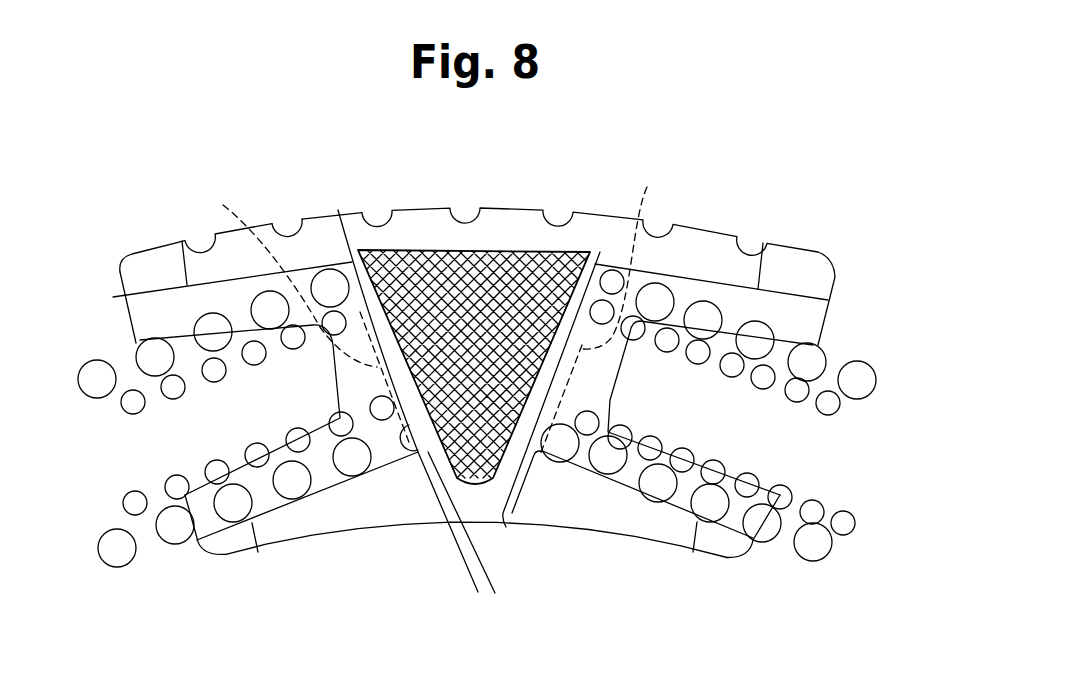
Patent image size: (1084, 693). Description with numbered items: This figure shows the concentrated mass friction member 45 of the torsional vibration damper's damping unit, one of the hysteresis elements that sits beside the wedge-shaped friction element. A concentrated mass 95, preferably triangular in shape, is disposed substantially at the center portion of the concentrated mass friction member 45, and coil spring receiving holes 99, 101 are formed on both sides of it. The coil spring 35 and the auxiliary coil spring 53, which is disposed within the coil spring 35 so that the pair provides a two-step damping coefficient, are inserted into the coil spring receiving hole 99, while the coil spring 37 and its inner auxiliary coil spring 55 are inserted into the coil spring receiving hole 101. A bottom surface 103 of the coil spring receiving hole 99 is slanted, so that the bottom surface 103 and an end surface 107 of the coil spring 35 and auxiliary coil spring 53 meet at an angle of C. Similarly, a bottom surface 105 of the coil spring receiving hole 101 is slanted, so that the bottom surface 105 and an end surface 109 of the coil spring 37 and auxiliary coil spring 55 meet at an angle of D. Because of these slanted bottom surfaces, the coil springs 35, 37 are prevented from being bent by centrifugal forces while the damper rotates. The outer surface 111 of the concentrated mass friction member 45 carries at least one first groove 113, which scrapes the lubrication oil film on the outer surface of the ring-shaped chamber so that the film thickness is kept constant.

The coil spring 35 is at (857, 361).
The coil spring 37 is at (84, 365).
The concentrated mass friction member 45 is at (474, 342).
The auxiliary coil spring 53 is at (827, 415).
The auxiliary coil spring 55 is at (125, 412).
The concentrated mass 95 is at (433, 527).
The coil spring receiving hole 99 is at (706, 422).
The coil spring receiving hole 101 is at (278, 422).
The bottom surface 103 is at (560, 323).
The bottom surface 105 is at (338, 210).
The end surface 107 is at (620, 308).
The end surface 109 is at (289, 313).
The outer surface 111 is at (477, 249).
The first groove 113 is at (287, 222).
The angle C is at (470, 488).
The angle D is at (520, 565).